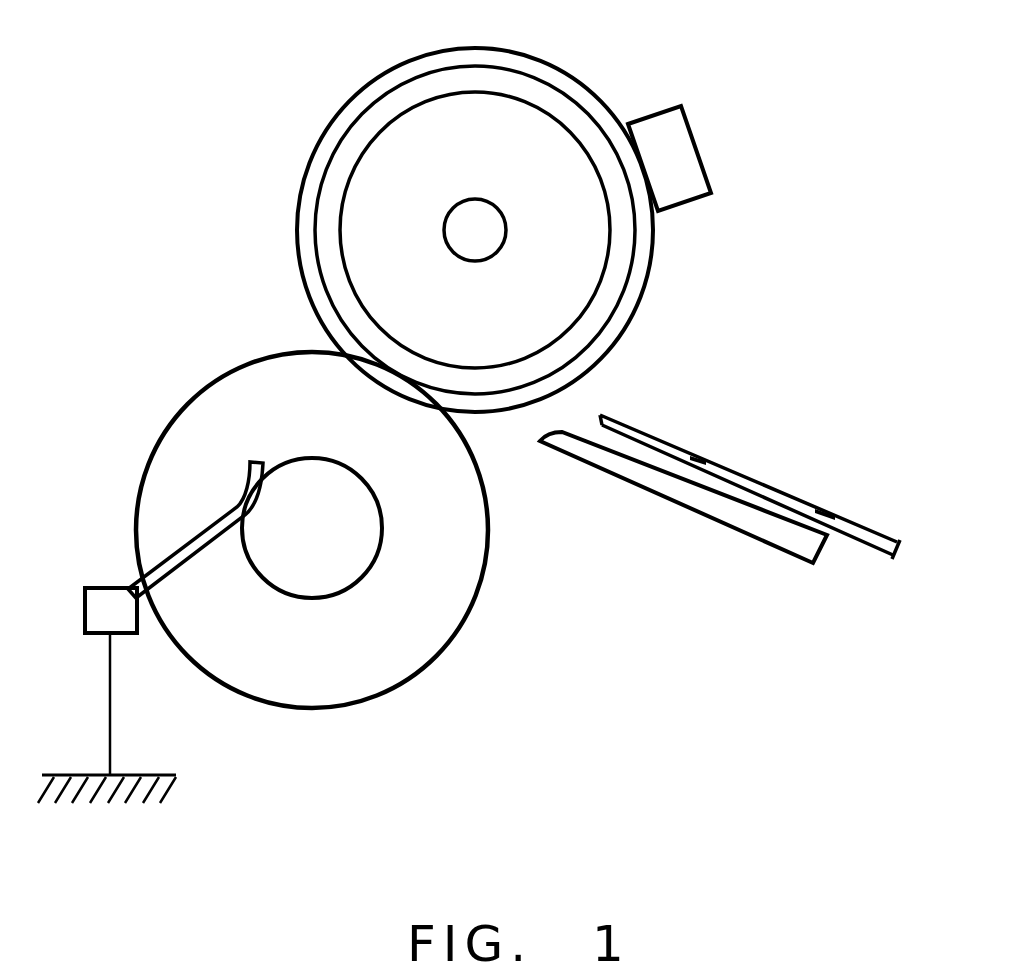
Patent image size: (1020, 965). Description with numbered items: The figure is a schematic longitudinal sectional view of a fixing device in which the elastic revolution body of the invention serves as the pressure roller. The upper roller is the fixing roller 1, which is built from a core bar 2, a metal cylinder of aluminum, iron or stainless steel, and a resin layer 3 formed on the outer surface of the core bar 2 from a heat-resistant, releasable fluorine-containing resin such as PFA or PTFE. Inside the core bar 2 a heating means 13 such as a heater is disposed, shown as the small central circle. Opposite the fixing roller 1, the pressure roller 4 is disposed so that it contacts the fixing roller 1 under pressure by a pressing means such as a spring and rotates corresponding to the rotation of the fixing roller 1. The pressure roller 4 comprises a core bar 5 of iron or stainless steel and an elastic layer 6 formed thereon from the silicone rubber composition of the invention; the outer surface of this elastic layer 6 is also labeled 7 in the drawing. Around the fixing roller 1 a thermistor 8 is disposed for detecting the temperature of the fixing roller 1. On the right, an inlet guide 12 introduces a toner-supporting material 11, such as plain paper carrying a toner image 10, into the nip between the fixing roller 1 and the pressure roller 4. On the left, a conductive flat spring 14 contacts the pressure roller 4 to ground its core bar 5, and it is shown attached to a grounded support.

The fixing roller 1 is at (355, 92).
The core bar 2 is at (327, 187).
The resin layer 3 is at (305, 242).
The pressure roller 4 is at (488, 545).
The core bar 5 is at (303, 583).
The elastic layer 6 is at (440, 617).
The roller surface 7 is at (403, 685).
The thermistor 8 is at (708, 171).
The toner image 10 is at (705, 455).
The toner-supporting material 11 is at (822, 507).
The inlet guide 12 is at (763, 525).
The heating means 13 is at (488, 232).
The conductive flat spring 14 is at (133, 577).